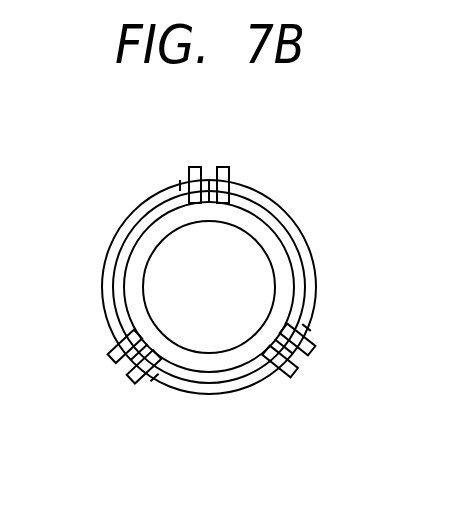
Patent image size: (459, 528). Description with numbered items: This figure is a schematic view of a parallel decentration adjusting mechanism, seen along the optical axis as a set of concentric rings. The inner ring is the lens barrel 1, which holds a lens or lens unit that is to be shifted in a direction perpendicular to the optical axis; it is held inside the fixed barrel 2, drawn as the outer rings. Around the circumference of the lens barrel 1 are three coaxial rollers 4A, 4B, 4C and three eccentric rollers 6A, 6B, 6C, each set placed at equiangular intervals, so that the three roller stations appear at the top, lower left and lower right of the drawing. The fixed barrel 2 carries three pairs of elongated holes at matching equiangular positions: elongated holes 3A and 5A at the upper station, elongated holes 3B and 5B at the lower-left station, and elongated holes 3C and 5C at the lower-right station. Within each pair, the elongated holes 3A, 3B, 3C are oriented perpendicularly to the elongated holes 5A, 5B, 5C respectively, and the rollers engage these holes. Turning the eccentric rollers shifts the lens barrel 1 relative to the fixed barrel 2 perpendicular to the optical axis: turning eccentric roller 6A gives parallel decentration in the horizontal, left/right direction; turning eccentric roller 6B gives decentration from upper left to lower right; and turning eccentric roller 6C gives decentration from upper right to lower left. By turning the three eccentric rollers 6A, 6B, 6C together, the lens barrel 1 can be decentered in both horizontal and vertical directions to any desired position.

The lens barrel 1 is at (270, 241).
The fixed barrel 2 is at (272, 183).
The elongated hole 3A is at (182, 183).
The coaxial roller 4A is at (191, 167).
The elongated hole 5A is at (210, 180).
The eccentric roller 6A is at (221, 167).
The elongated hole 3B is at (146, 381).
The coaxial roller 4B is at (127, 382).
The elongated hole 5B is at (117, 372).
The eccentric roller 6B is at (111, 357).
The elongated hole 3C is at (318, 333).
The coaxial roller 4C is at (311, 355).
The elongated hole 5C is at (283, 374).
The eccentric roller 6C is at (301, 374).